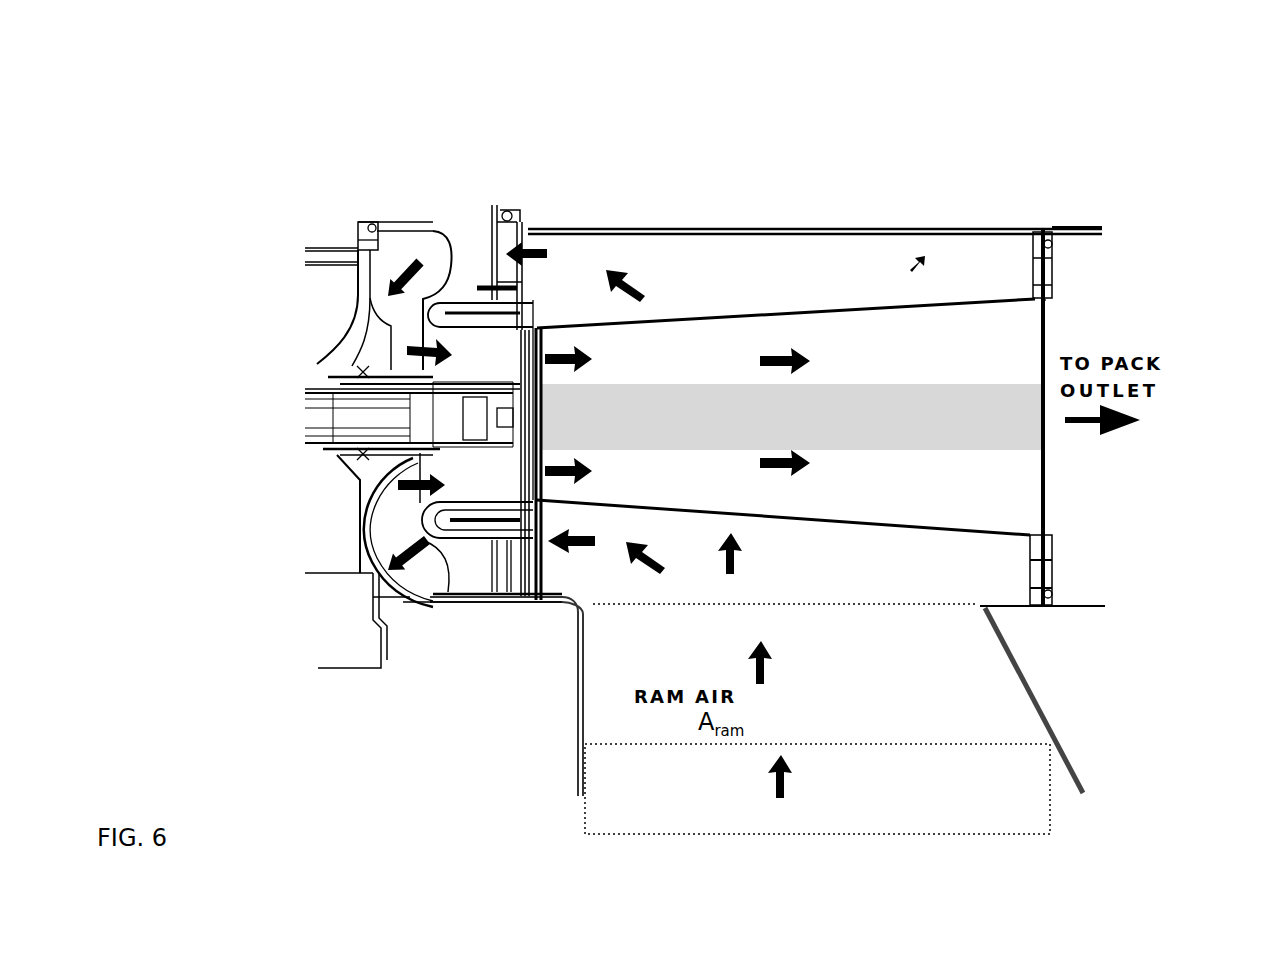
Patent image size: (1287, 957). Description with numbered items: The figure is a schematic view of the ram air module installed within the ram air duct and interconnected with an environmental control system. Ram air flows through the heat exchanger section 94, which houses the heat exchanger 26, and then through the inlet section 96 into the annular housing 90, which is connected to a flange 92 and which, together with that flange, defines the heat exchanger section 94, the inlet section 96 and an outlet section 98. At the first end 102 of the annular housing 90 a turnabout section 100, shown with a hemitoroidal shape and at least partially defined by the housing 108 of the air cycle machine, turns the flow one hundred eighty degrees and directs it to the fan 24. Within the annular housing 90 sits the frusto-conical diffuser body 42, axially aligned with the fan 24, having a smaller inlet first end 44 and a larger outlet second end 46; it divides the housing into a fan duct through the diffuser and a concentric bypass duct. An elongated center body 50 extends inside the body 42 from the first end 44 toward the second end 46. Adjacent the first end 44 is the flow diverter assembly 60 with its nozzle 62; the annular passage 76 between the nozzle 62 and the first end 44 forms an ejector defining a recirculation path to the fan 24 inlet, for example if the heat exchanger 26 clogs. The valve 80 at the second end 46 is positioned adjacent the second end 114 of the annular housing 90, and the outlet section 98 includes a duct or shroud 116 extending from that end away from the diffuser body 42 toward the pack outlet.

The fan 24 is at (473, 508).
The heat exchanger 26 is at (817, 789).
The body 42 is at (808, 332).
The first end 44 is at (531, 540).
The second end 46 is at (1046, 508).
The center body 50 is at (823, 384).
The flow diverter assembly 60 is at (492, 242).
The nozzle 62 is at (462, 315).
The annular passage 76 is at (534, 340).
The valve 80 is at (1031, 268).
The annular housing 90 is at (684, 229).
The flange 92 is at (1085, 777).
The heat exchanger section 94 is at (672, 721).
The inlet section 96 is at (880, 563).
The outlet section 98 is at (1088, 283).
The turnabout section 100 is at (400, 527).
The first end 102 is at (530, 322).
The housing 108 is at (430, 603).
The second end 114 is at (1046, 229).
The duct or shroud 116 is at (1085, 229).